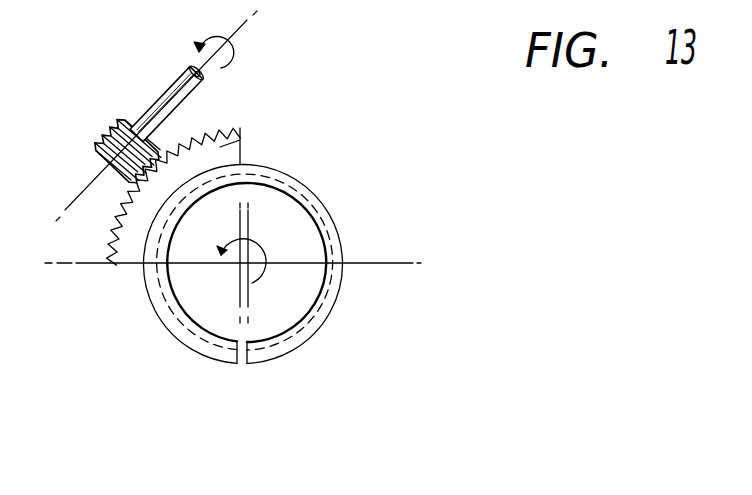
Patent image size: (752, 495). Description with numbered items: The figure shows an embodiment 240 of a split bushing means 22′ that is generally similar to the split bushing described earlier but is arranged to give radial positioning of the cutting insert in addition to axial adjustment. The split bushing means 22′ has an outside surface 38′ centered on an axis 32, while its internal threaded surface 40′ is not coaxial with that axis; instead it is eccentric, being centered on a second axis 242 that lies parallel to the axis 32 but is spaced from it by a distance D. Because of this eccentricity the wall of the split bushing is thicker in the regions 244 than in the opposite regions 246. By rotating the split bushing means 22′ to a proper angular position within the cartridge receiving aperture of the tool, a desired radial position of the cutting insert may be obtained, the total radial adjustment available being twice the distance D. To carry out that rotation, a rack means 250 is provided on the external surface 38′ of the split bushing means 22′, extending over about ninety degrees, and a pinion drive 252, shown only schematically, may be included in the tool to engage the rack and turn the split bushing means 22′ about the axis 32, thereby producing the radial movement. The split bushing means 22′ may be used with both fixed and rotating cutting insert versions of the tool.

The embodiment of split bushing means 240 is at (463, 181).
The thicker wall regions 244 is at (145, 283).
The split bushing means 22′ is at (364, 119).
The outside surface 38′ is at (323, 200).
The thinner wall regions 246 is at (342, 273).
The internal threaded surface 40′ is at (367, 339).
The axis of internal threaded surface 242 is at (243, 263).
The axis of outside surface 32 is at (243, 263).
The rack means 250 is at (240, 138).
The pinion drive 252 is at (103, 128).